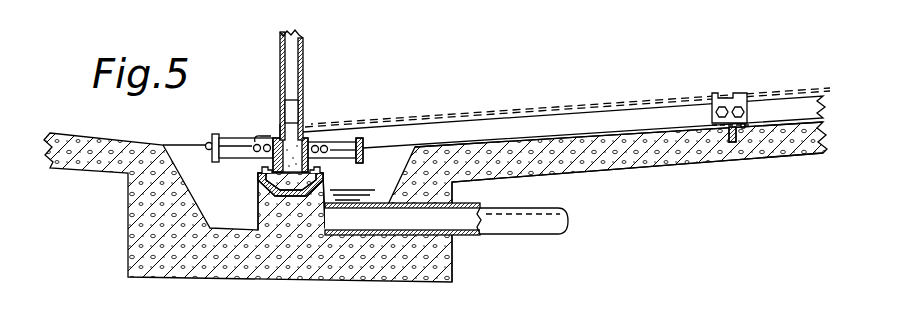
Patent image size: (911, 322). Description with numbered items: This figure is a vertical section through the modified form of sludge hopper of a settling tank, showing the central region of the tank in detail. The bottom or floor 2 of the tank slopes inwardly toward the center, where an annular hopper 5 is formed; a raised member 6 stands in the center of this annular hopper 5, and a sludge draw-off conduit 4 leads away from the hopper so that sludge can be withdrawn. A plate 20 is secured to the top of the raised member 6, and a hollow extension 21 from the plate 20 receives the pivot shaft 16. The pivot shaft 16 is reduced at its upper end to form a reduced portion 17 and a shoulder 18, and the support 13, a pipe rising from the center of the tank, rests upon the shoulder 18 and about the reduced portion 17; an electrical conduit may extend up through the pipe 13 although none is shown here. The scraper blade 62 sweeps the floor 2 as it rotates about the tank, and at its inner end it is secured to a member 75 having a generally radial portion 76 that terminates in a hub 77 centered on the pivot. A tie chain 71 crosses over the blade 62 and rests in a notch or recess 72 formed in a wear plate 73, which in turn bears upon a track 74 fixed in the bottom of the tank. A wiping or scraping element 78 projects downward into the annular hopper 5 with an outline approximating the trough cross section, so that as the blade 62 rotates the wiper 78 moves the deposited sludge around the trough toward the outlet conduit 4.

The bottom or floor 2 is at (657, 152).
The sludge draw-off conduit 4 is at (538, 228).
The annular hopper 5 is at (213, 205).
The raised member 6 is at (285, 216).
The support 13 is at (303, 53).
The pivot shaft 16 is at (303, 130).
The reduced portion 17 is at (291, 100).
The shoulder 18 is at (281, 125).
The plate 20 is at (261, 171).
The hollow extension 21 is at (326, 167).
The scraper blade 62 is at (528, 128).
The tie chain 71 is at (630, 104).
The notch or recess 72 is at (725, 97).
The wear plate 73 is at (744, 128).
The track 74 is at (733, 143).
The member 75 is at (216, 140).
The radial portion 76 is at (242, 147).
The hub 77 is at (301, 140).
The wiping or scraping element 78 is at (358, 218).